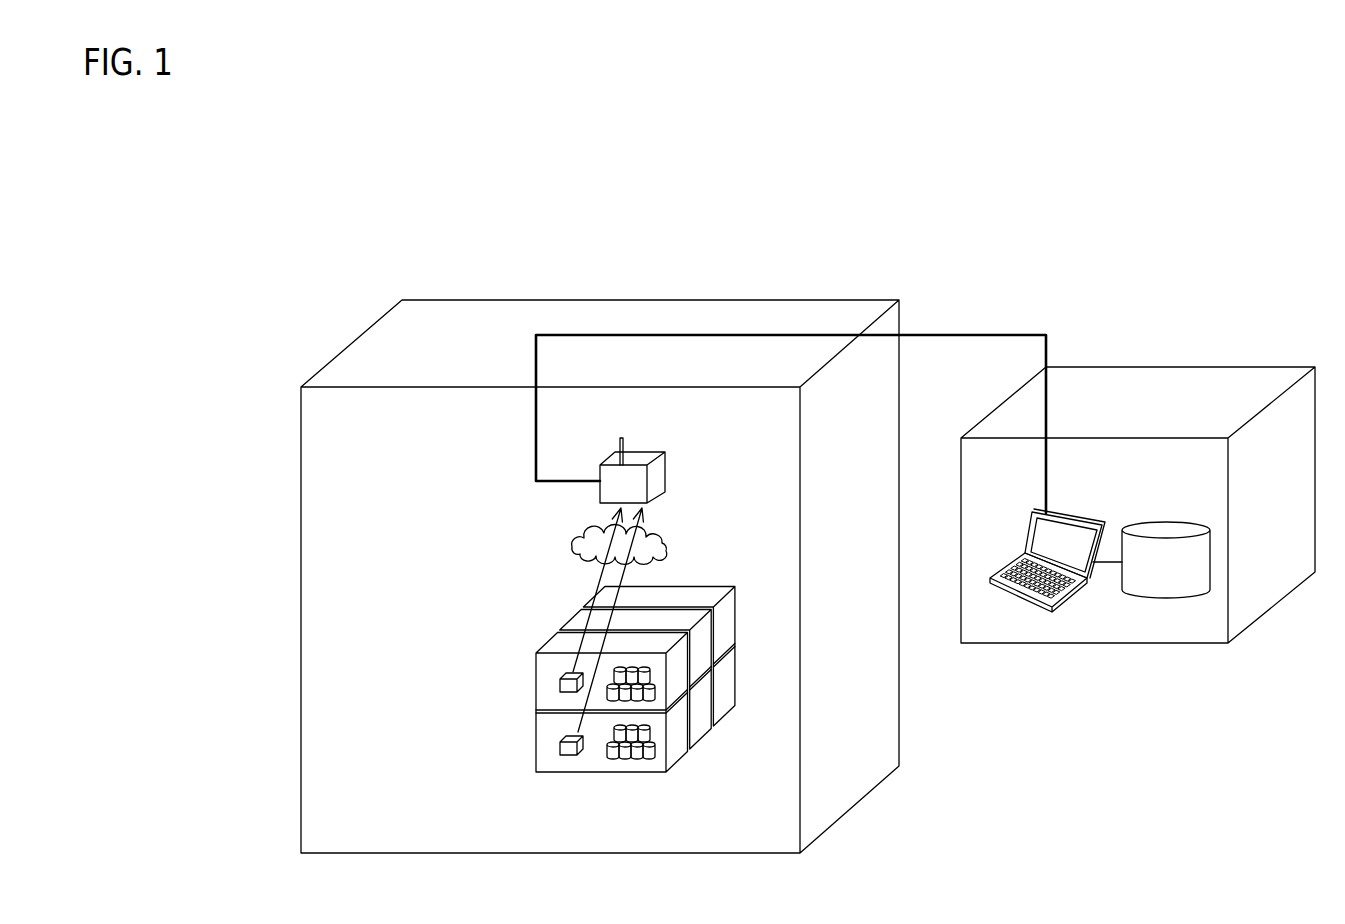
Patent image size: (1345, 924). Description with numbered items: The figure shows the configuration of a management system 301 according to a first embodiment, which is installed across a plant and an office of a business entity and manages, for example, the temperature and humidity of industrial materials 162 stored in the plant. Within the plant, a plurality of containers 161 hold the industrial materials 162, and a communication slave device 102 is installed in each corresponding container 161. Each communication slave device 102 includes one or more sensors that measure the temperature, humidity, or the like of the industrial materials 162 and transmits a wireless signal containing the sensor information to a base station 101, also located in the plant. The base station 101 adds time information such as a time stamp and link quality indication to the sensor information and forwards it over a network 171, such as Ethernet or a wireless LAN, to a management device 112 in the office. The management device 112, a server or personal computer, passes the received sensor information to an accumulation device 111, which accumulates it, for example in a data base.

The base station 101 is at (643, 449).
The communication slave device 102 is at (558, 689).
The accumulation device 111 is at (1190, 522).
The management device 112 is at (1068, 517).
The container 161 is at (553, 637).
The industrial materials 162 is at (637, 762).
The network 171 is at (942, 334).
The management system 301 is at (1224, 236).